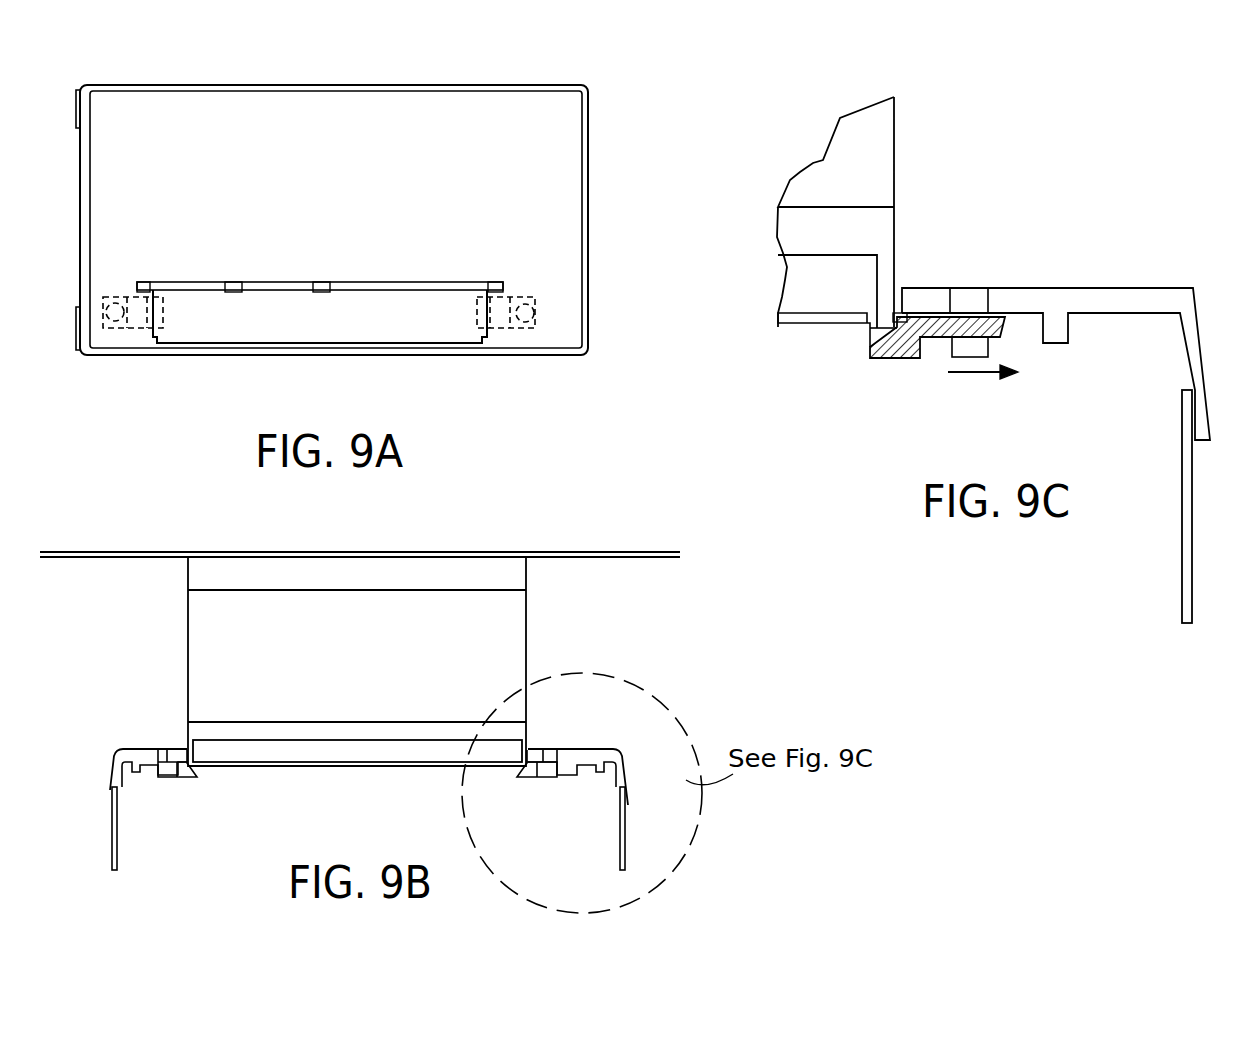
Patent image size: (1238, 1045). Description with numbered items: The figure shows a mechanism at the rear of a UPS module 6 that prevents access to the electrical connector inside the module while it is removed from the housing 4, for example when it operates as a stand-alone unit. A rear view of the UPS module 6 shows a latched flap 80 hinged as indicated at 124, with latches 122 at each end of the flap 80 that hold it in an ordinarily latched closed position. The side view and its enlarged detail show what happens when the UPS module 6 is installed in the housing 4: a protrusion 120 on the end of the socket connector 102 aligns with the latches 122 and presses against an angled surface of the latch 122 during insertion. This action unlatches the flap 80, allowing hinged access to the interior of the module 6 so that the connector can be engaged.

In FIG. 9B, the housing 4 is at (150, 628).
In FIG. 9A, the UPS module 6 is at (598, 208).
In FIG. 9B, the UPS module 6 is at (205, 818).
In FIG. 9A, the latched flap 80 is at (408, 328).
In FIG. 9B, the socket connector 102 is at (510, 627).
In FIG. 9C, the socket connector 102 is at (877, 148).
In FIG. 9B, the protrusion 120 is at (522, 745).
In FIG. 9C, the protrusion 120 is at (885, 272).
In FIG. 9A, the latch 122 is at (142, 318).
In FIG. 9B, the latch 122 is at (533, 772).
In FIG. 9C, the latch 122 is at (912, 360).
In FIG. 9A, the hinge 124 is at (324, 280).